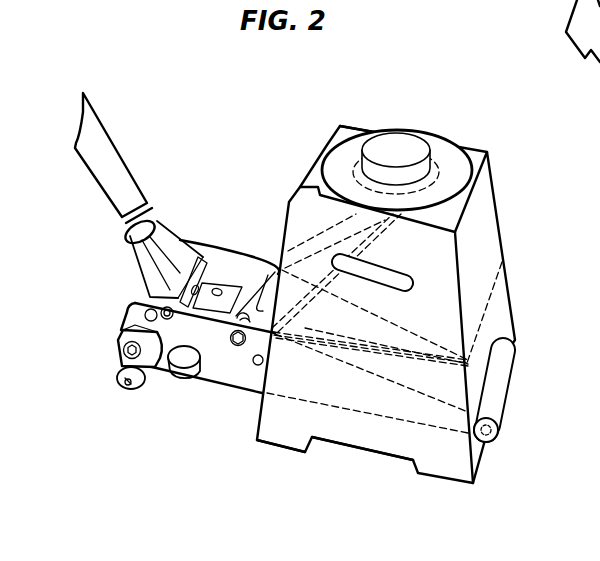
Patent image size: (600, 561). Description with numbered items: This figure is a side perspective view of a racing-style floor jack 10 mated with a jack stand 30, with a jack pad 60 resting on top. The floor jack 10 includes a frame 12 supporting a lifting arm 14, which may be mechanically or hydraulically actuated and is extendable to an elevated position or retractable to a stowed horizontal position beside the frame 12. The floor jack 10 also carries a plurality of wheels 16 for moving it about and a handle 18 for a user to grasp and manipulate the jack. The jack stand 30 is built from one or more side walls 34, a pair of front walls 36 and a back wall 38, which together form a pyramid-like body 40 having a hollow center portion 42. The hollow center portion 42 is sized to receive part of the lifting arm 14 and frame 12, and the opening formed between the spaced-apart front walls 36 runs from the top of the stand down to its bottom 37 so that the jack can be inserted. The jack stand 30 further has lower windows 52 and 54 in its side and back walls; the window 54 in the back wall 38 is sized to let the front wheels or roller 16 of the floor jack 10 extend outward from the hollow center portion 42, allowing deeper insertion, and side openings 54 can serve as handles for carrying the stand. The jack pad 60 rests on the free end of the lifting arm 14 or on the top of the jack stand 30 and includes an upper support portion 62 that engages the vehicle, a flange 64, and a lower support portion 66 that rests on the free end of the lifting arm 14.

The floor jack 10 is at (98, 340).
The frame 12 is at (232, 368).
The lifting arm 14 is at (270, 275).
The wheels 16 is at (142, 384).
The handle 18 is at (108, 148).
The jack stand 30 is at (415, 304).
The side walls 34 is at (421, 260).
The front walls 36 is at (285, 221).
The bottom 37 is at (270, 448).
The back wall 38 is at (490, 232).
The pyramid-like body 40 is at (494, 170).
The hollow center portion 42 is at (471, 222).
The lower windows 52 is at (384, 462).
The window 54 is at (408, 288).
The jack pad 60 is at (385, 148).
The upper support portion 62 is at (386, 140).
The flange 64 is at (338, 160).
The lower support portion 66 is at (365, 196).